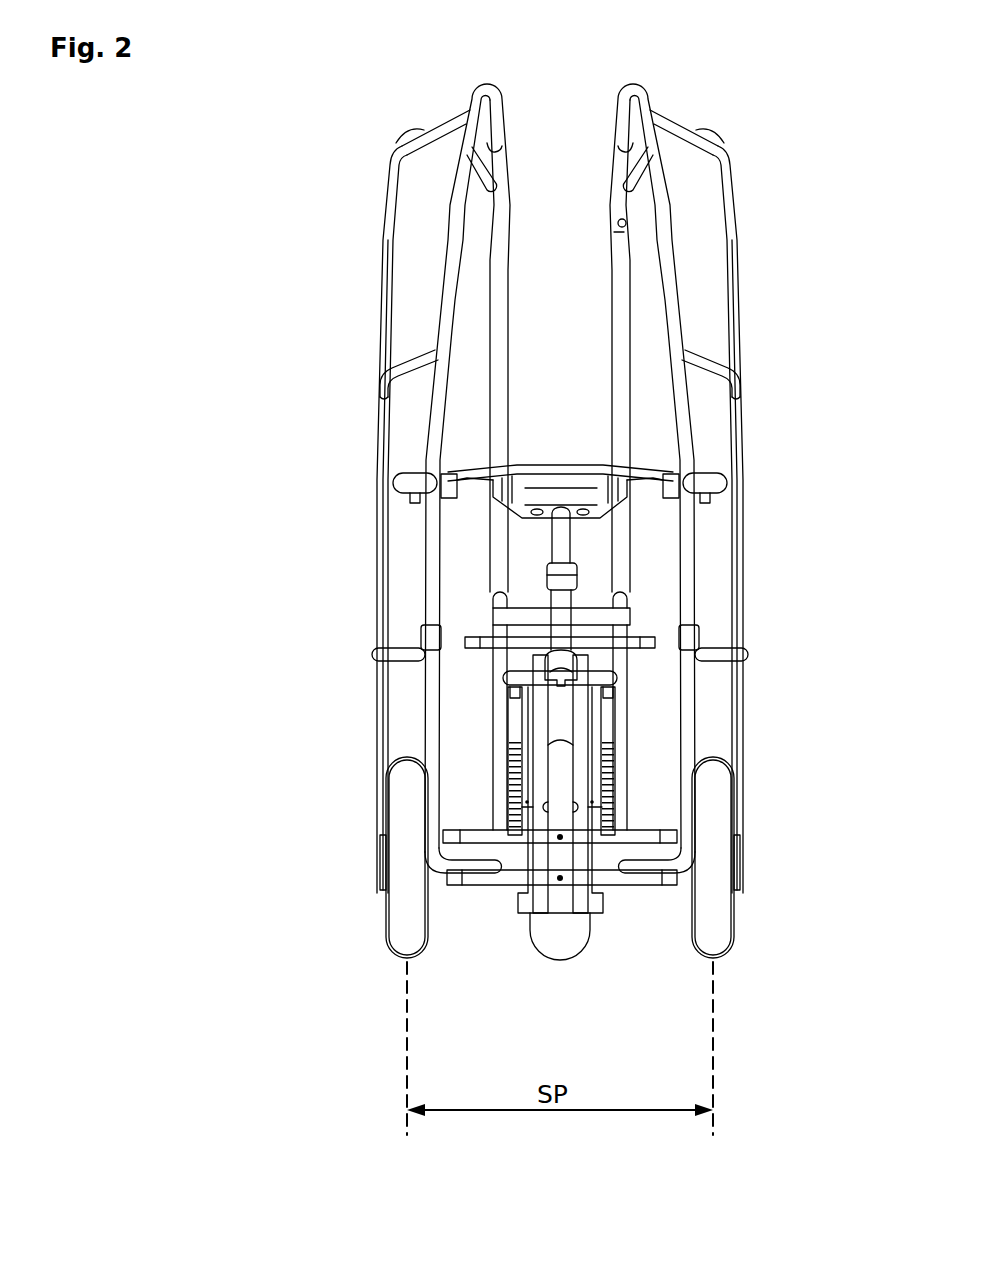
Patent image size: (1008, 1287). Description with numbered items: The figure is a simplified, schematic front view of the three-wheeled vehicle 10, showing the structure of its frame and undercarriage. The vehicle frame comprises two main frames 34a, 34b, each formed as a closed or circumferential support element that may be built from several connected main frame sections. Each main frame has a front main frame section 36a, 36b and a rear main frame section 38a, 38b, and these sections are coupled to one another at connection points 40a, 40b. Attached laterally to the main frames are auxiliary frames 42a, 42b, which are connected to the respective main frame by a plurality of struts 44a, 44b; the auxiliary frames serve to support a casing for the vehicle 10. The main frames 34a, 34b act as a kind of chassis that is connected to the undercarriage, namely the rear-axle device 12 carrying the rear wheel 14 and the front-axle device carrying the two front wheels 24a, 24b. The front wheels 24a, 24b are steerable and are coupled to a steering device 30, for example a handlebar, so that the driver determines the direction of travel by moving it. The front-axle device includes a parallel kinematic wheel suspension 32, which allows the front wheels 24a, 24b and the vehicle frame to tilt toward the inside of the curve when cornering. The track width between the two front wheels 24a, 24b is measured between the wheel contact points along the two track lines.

The vehicle 10 is at (298, 186).
The rear-axle device 12 is at (650, 795).
The rear wheel 14 is at (557, 934).
The front wheel 24a is at (395, 852).
The front wheel 24b is at (720, 852).
The steering device 30 is at (565, 487).
The parallel kinematic wheel suspension 32 is at (482, 835).
The main frame 34a is at (424, 430).
The main frame 34b is at (698, 424).
The front main frame section 36a is at (447, 320).
The front main frame section 36b is at (672, 300).
The rear main frame section 38a is at (503, 303).
The rear main frame section 38b is at (617, 352).
The connection point 40a is at (503, 150).
The connection point 40b is at (626, 149).
The auxiliary frame 42a is at (387, 247).
The auxiliary frame 42b is at (733, 240).
The struts 44a is at (446, 124).
The struts 44b is at (672, 122).